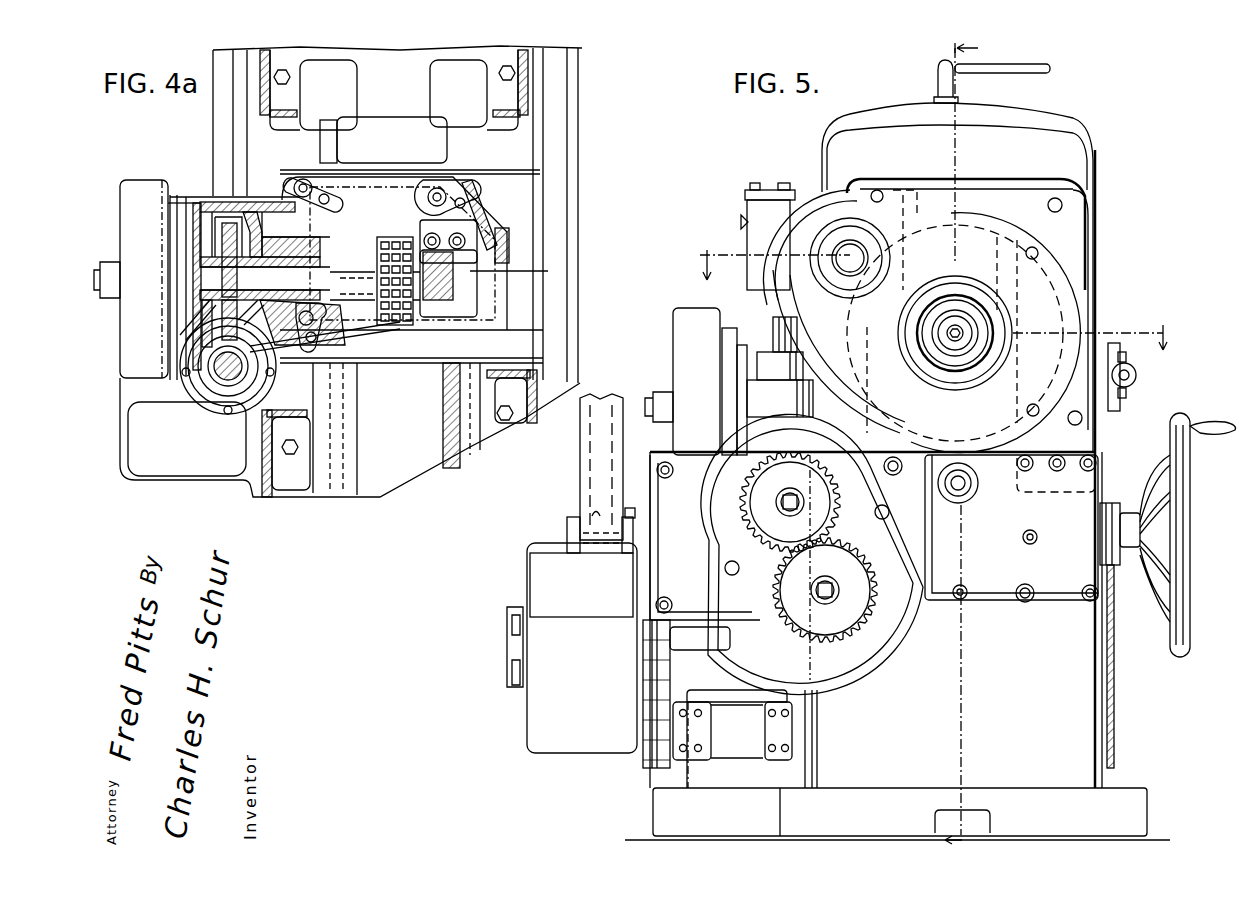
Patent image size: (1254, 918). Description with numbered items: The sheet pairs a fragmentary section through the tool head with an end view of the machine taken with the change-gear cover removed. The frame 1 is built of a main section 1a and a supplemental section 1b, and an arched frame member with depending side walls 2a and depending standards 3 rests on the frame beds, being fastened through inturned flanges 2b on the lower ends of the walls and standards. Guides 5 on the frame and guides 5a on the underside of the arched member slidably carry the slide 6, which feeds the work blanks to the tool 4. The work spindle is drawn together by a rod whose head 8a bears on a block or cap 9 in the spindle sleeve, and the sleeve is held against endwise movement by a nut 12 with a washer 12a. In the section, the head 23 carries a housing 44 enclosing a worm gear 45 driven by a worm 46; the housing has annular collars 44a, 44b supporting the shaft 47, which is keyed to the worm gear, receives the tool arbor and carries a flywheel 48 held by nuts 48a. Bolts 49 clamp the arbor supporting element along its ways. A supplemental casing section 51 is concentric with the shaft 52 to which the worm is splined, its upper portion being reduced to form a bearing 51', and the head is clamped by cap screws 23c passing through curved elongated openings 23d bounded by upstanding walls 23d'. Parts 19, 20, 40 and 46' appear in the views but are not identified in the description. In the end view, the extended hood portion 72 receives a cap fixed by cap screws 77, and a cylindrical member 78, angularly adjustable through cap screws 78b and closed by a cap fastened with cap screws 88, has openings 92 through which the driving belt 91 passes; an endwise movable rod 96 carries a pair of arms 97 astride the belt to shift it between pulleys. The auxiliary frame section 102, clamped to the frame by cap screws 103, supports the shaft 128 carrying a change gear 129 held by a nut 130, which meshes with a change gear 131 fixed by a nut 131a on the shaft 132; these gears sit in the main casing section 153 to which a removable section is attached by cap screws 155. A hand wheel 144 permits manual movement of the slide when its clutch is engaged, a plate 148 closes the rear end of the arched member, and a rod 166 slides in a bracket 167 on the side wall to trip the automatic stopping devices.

In FIG. 5, the frame 1 is at (897, 471).
In FIG. 5, the main section 1a is at (873, 620).
In FIG. 4A, the supplemental section 1b is at (394, 90).
In FIG. 4A, the depending side walls 2a is at (262, 497).
In FIG. 4A, the inturned flanges 2b is at (297, 490).
In FIG. 4A, the depending standards 3 is at (528, 93).
In FIG. 4A, the tool 4 is at (395, 272).
In FIG. 4A, the guides 5 is at (447, 450).
In FIG. 5, the guides 5a is at (938, 313).
In FIG. 5, the slide 6 is at (963, 443).
In FIG. 5, the head 8a is at (953, 350).
In FIG. 5, the block or cap 9 is at (962, 340).
In FIG. 5, the nut 12 is at (938, 362).
In FIG. 5, the washer 12a is at (930, 352).
In FIG. 5, the pin 19 is at (930, 81).
In FIG. 5, the handle rod 20 is at (1008, 75).
In FIG. 4A, the head 23 is at (411, 240).
In FIG. 4A, the cap screws 23c is at (338, 203).
In FIG. 4A, the elongated openings 23d is at (405, 180).
In FIG. 4A, the upstanding walls 23d' is at (325, 294).
In FIG. 4A, the shaft 40 is at (375, 284).
In FIG. 4A, the housing 44 is at (190, 200).
In FIG. 4A, the annular collar 44a is at (300, 240).
In FIG. 4A, the annular collar 44b is at (178, 200).
In FIG. 5, the annular collar 44b is at (740, 400).
In FIG. 4A, the worm gear 45 is at (228, 217).
In FIG. 4A, the worm 46 is at (341, 348).
In FIG. 4A, the bearing housing wall 46' is at (522, 272).
In FIG. 4A, the shaft 47 is at (206, 270).
In FIG. 5, the shaft 47 is at (652, 396).
In FIG. 4A, the flywheel 48 is at (144, 279).
In FIG. 5, the flywheel 48 is at (696, 381).
In FIG. 4A, the nuts 48a is at (101, 262).
In FIG. 4A, the bolts 49 is at (478, 250).
In FIG. 4A, the supplemental casing section 51 is at (191, 373).
In FIG. 5, the supplemental casing section 51 is at (780, 398).
In FIG. 5, the bearing 51' is at (780, 366).
In FIG. 4A, the shaft 52 is at (255, 392).
In FIG. 5, the shaft 52 is at (776, 322).
In FIG. 5, the extended portion 72 is at (765, 245).
In FIG. 5, the cap screws 77 is at (786, 190).
In FIG. 5, the cylindrical member 78 is at (582, 648).
In FIG. 5, the cap screws 78b is at (643, 648).
In FIG. 5, the cap screws 88 is at (510, 665).
In FIG. 5, the belt 91 is at (601, 467).
In FIG. 5, the openings 92 is at (545, 552).
In FIG. 5, the rod 96 is at (631, 513).
In FIG. 5, the arms 97 is at (568, 545).
In FIG. 5, the auxiliary frame section 102 is at (1010, 600).
In FIG. 5, the cap screws 103 is at (664, 597).
In FIG. 5, the shaft 128 is at (790, 502).
In FIG. 5, the change gear 129 is at (834, 497).
In FIG. 5, the nut 130 is at (806, 505).
In FIG. 5, the change gear 131 is at (877, 600).
In FIG. 5, the nut 131a is at (840, 575).
In FIG. 5, the shaft 132 is at (845, 588).
In FIG. 5, the hand wheel 144 is at (1185, 534).
In FIG. 5, the plate 148 is at (1030, 270).
In FIG. 5, the main casing section 153 is at (720, 492).
In FIG. 5, the cap screws 155 is at (879, 519).
In FIG. 5, the rod 166 is at (1130, 368).
In FIG. 5, the bracket 167 is at (1127, 392).